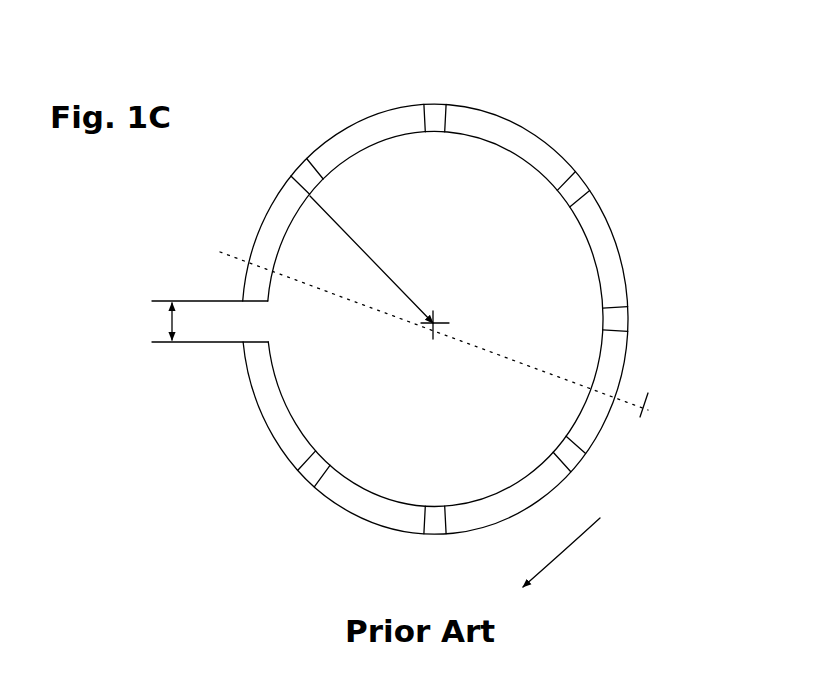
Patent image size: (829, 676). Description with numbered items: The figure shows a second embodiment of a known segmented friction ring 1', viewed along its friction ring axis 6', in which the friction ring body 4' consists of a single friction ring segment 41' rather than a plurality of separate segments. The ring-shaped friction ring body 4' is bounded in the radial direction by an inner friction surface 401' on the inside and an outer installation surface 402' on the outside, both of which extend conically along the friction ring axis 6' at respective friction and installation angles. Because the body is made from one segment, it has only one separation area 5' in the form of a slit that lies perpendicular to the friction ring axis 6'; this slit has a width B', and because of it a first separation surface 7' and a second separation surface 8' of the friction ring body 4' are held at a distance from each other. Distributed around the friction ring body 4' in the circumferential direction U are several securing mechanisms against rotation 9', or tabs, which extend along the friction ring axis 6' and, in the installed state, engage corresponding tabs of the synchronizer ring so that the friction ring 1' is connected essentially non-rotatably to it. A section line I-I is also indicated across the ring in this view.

The friction ring 1' is at (369, 315).
The friction ring body 4' is at (435, 286).
The friction ring segment 41' is at (435, 286).
The outer installation surface 402' is at (435, 286).
The inner friction surface 401' is at (435, 318).
The securing mechanism against rotation 9' is at (479, 315).
The separation area 5' is at (156, 335).
The width of the slit B' is at (123, 312).
The first separation surface 7' is at (209, 266).
The second separation surface 8' is at (205, 390).
The friction ring axis 6' is at (379, 293).
The section line I-I is at (222, 256).
The circumferential direction U is at (561, 556).